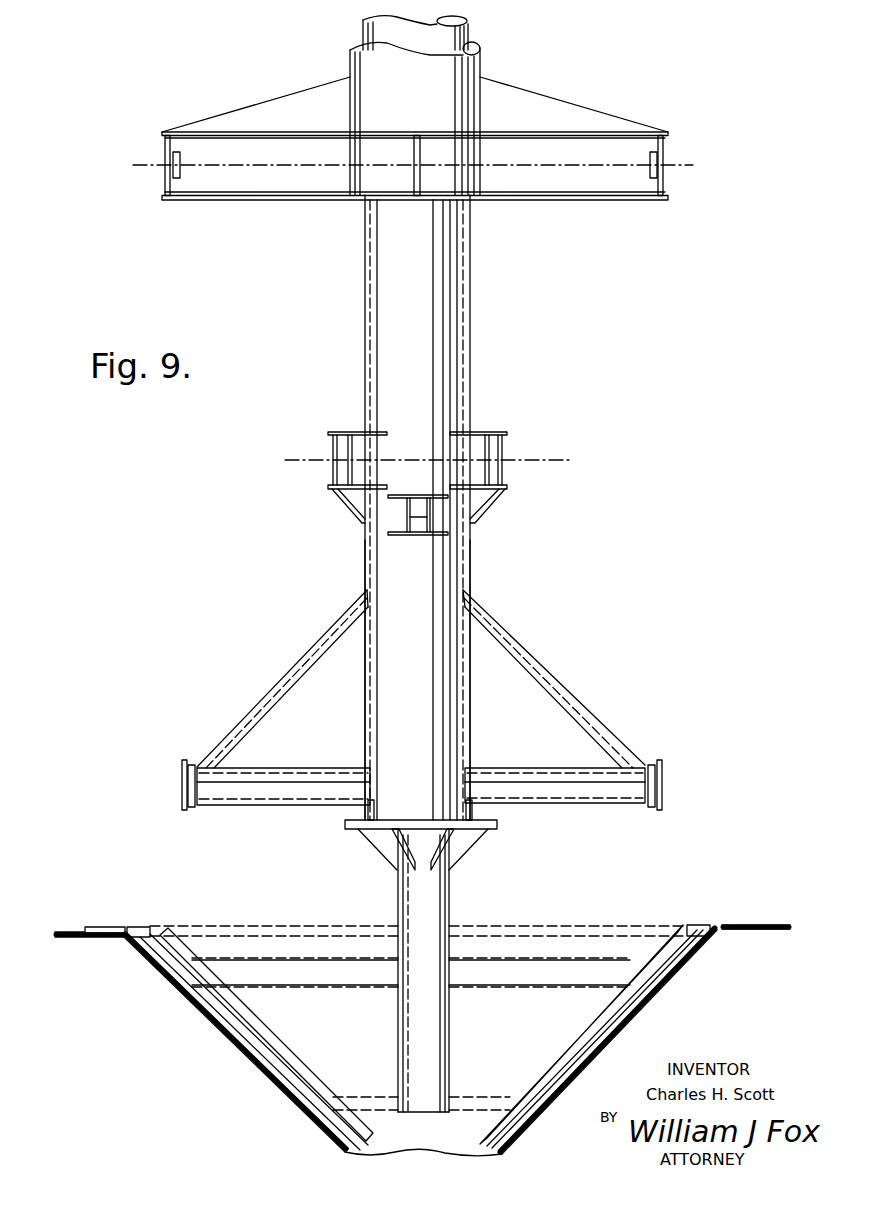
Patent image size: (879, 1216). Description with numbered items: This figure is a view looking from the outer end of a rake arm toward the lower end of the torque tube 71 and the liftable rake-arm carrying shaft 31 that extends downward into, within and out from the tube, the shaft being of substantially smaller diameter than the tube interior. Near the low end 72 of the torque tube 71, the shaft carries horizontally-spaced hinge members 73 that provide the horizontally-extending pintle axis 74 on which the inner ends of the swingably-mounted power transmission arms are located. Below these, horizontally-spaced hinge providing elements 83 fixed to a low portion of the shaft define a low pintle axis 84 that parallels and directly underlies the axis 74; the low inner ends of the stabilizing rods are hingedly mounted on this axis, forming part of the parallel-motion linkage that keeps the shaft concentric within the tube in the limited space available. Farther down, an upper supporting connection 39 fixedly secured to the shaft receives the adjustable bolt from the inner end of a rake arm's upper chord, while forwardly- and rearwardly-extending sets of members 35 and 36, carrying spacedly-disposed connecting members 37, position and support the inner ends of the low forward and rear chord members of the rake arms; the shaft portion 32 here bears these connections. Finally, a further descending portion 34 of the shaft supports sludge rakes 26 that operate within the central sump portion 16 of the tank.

The central sump portion 16 is at (222, 1035).
The sludge rake 26 is at (597, 1017).
The liftable shaft 31 is at (470, 300).
The column section 32 is at (408, 582).
The descending portion of the shaft 34 is at (397, 903).
The forwardly-extending set of members 35 is at (310, 668).
The rearwardly-extending set of members 36 is at (262, 767).
The connecting member 37 is at (196, 802).
The upper supporting connection 39 is at (407, 516).
The torque tube 71 is at (480, 67).
The low end of the torque tube 72 is at (548, 56).
The hinge member 73 is at (167, 180).
The pintle axis 74 is at (133, 165).
The hinge providing element 83 is at (332, 472).
The low pintle axis 84 is at (300, 460).